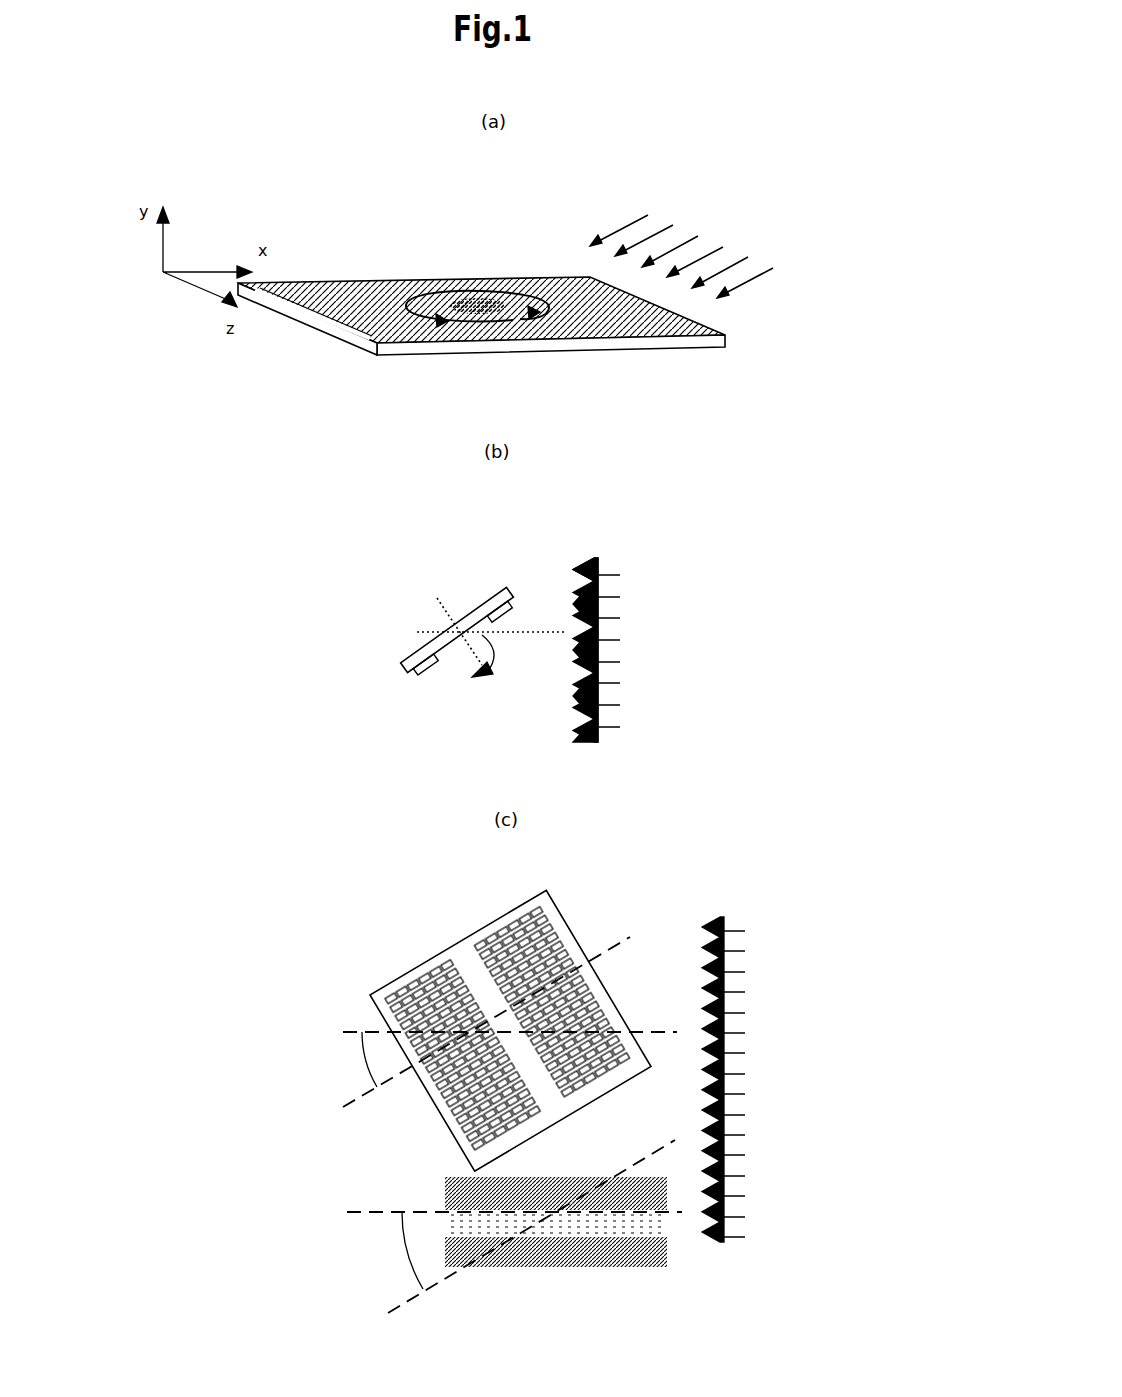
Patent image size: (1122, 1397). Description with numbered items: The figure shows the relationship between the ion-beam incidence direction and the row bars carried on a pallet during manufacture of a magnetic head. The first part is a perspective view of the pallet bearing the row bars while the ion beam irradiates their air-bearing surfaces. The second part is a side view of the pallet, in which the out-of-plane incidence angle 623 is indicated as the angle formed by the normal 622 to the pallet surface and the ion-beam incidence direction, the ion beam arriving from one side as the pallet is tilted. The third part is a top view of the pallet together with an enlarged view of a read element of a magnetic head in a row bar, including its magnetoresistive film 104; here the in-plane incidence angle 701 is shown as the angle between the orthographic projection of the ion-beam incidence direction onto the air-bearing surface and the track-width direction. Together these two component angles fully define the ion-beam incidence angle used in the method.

The normal 622 is at (447, 622).
The out-of-plane incidence angle 623 is at (493, 657).
The in-plane incidence angle 701 is at (363, 1060).
The magnetoresistive film 104 is at (558, 1225).